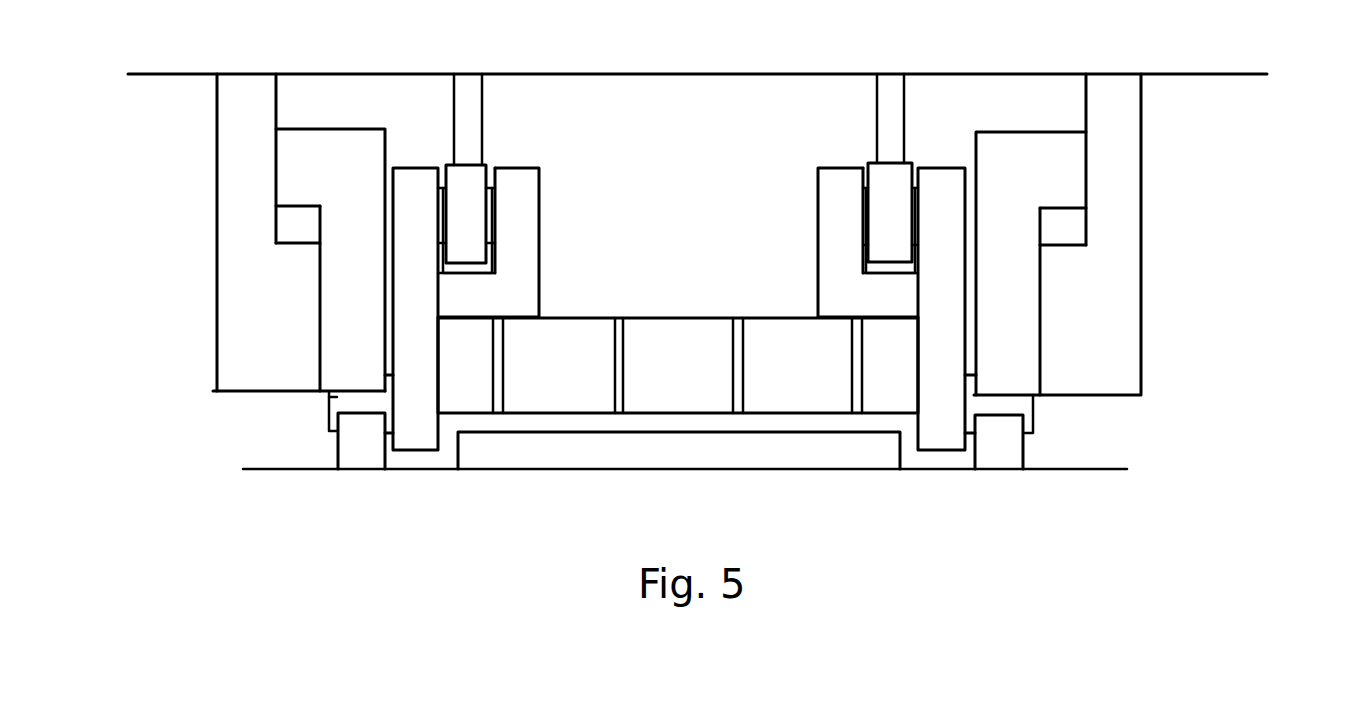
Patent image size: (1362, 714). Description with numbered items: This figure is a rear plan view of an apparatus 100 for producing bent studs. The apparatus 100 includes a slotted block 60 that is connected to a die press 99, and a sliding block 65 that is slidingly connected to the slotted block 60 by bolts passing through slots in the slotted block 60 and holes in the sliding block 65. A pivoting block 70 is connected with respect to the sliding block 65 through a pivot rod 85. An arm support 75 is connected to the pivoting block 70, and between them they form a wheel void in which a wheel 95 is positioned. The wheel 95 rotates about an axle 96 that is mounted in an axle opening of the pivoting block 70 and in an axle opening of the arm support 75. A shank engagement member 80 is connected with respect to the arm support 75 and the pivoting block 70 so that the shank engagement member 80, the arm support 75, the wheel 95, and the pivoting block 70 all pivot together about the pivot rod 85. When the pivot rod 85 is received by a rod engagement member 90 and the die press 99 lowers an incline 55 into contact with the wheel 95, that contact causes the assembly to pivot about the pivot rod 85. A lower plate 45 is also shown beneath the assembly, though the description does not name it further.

The base plate 45 is at (580, 460).
The incline 55 is at (466, 98).
The slotted block 60 is at (677, 234).
The sliding block 65 is at (681, 281).
The pivoting block 70 is at (679, 309).
The arm support 75 is at (678, 242).
The shank engagement member 80 is at (678, 365).
The pivot rod 85 is at (329, 397).
The rod engagement member 90 is at (352, 457).
The wheel 95 is at (477, 180).
The axle 96 is at (495, 208).
The die press 99 is at (732, 73).
The apparatus 100 is at (1240, 245).